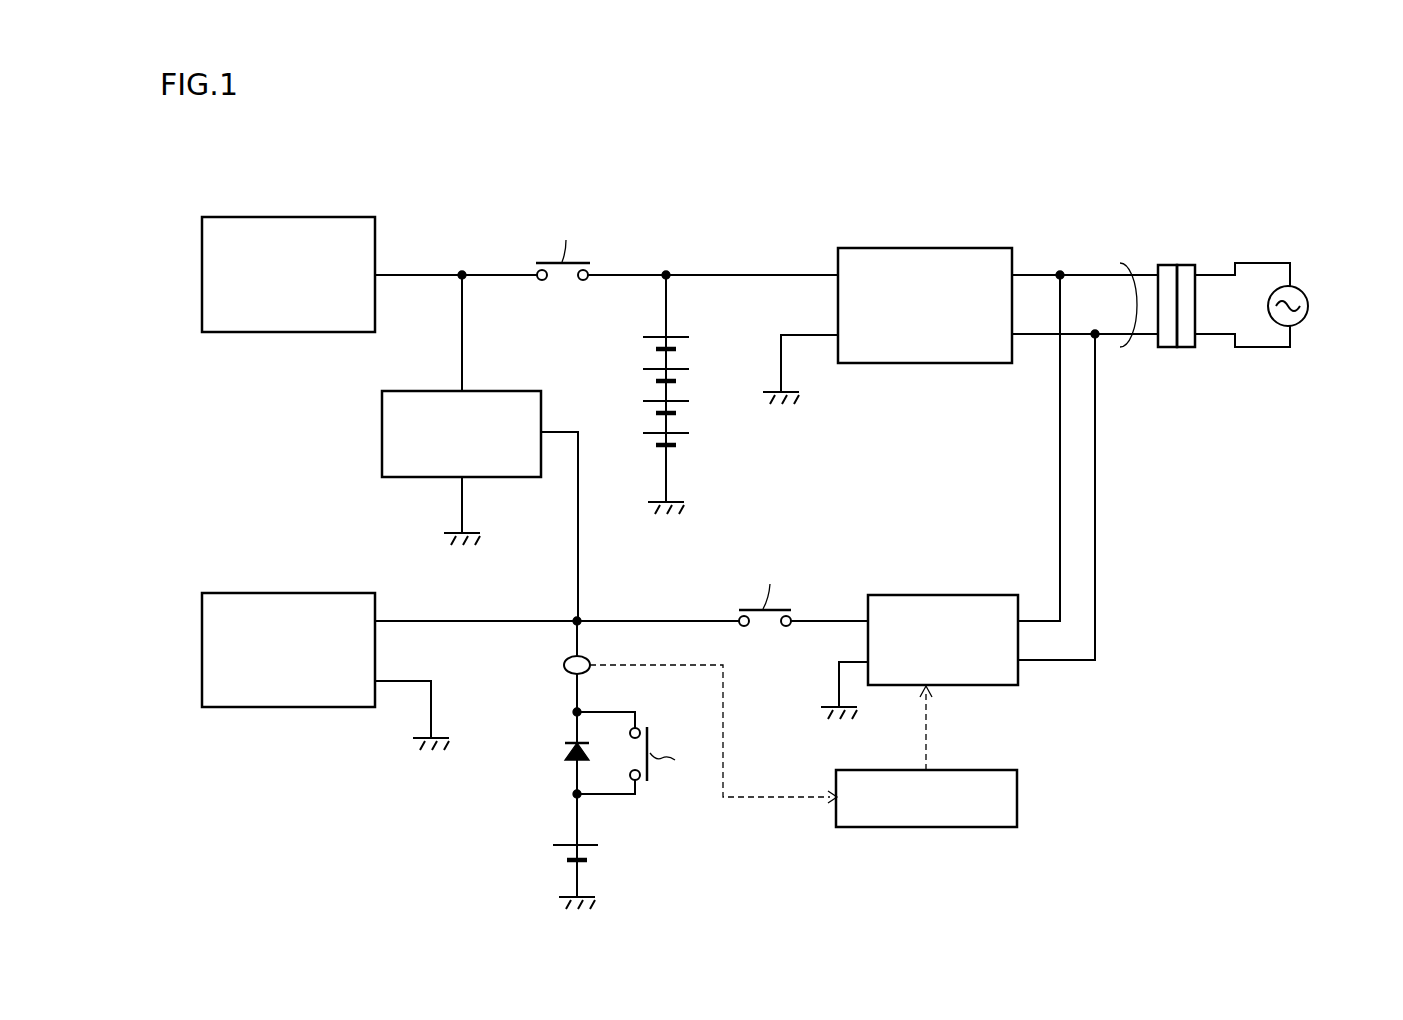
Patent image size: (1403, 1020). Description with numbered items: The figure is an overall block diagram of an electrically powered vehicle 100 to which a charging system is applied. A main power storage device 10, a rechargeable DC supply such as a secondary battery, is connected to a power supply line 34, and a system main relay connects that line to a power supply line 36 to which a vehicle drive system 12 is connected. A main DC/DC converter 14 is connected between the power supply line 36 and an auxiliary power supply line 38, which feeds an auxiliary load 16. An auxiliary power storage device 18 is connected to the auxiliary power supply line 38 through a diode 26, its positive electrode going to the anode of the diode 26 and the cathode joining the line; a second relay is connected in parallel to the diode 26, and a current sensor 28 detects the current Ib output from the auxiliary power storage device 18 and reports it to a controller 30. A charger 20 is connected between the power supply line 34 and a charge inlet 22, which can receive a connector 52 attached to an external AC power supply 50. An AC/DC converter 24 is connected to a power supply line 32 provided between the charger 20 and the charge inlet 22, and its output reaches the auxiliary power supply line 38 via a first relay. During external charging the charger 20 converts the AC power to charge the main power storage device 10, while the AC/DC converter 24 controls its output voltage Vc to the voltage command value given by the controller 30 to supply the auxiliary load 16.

The electrically powered vehicle 100 is at (446, 142).
The main power storage device 10 is at (682, 337).
The vehicle drive system 12 is at (318, 217).
The main DC/DC converter 14 is at (497, 391).
The auxiliary load 16 is at (318, 593).
The auxiliary power storage device 18 is at (570, 845).
The charger 20 is at (960, 248).
The charge inlet 22 is at (1170, 265).
The AC/DC converter 24 is at (965, 595).
The diode 26 is at (565, 752).
The current sensor 28 is at (564, 665).
The controller 30 is at (1017, 800).
The power supply line 32 is at (1123, 350).
The power supply line 34 is at (744, 274).
The power supply line 36 is at (425, 274).
The auxiliary power supply line 38 is at (507, 620).
The AC power supply 50 is at (1308, 306).
The connector 52 is at (1185, 265).